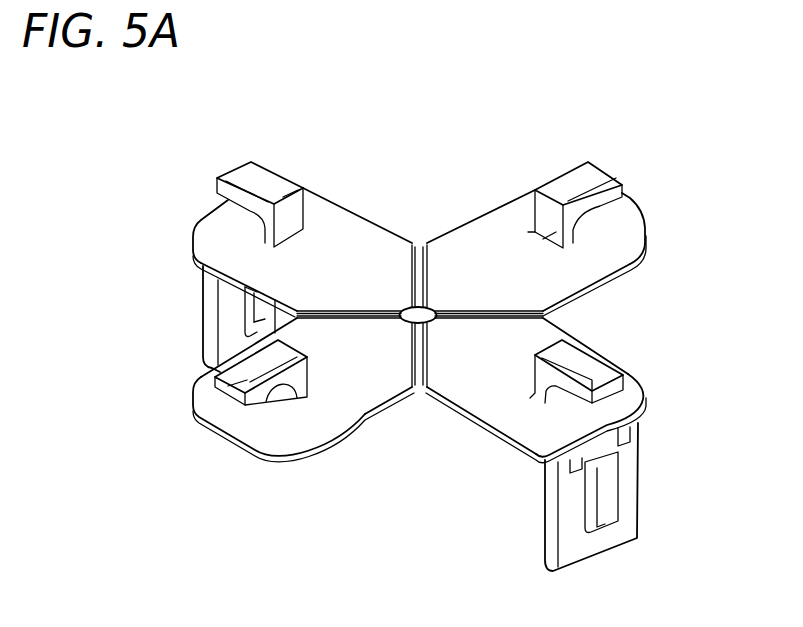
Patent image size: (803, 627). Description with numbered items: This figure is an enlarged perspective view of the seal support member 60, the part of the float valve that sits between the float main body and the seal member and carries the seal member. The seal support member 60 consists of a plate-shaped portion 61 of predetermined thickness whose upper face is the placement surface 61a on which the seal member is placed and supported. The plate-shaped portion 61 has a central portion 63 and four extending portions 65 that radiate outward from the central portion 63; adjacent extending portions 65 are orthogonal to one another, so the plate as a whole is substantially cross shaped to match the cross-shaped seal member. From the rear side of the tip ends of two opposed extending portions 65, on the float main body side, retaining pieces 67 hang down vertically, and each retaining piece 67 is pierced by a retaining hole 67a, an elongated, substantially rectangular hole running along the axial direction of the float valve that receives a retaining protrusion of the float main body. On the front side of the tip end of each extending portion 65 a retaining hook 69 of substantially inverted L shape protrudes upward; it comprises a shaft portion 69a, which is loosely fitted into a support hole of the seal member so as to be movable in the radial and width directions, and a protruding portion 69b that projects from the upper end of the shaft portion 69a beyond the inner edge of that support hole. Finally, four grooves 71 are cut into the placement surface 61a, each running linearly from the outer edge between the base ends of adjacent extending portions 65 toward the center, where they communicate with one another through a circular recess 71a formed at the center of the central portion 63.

The seal support member 60 is at (334, 187).
The plate-shaped portion 61 is at (636, 262).
The placement surface 61a is at (480, 228).
The central portion 63 is at (457, 345).
The extending portion 65 is at (203, 230).
The retaining piece 67 is at (208, 332).
The retaining hole 67a is at (630, 512).
The retaining hook 69 is at (245, 172).
The shaft portion 69a is at (570, 232).
The protruding portion 69b is at (593, 168).
The groove 71 is at (491, 316).
The circular recess 71a is at (410, 307).